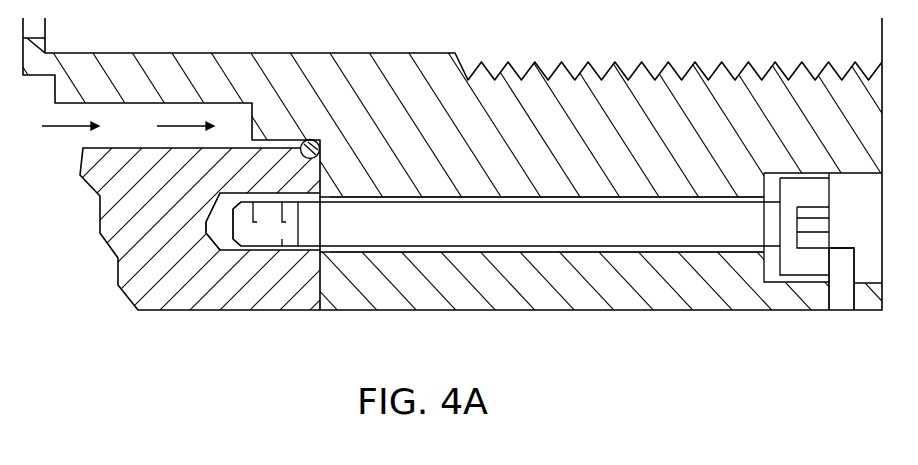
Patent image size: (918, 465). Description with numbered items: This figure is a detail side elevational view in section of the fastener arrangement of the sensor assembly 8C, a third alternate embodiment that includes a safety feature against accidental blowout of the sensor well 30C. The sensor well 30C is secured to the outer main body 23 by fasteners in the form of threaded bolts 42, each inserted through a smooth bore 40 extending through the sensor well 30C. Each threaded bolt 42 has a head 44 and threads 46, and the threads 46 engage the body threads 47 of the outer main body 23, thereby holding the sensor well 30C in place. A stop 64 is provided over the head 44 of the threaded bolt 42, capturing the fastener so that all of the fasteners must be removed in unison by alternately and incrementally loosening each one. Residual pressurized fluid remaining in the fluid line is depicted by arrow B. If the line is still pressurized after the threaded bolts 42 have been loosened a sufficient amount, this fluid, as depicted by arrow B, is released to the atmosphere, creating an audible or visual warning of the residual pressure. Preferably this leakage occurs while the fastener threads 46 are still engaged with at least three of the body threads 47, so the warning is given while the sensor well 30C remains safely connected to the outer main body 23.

The outer main body 23 is at (145, 311).
The sensor well 30C is at (550, 311).
The smooth bore 40 is at (450, 252).
The threaded bolt 42 is at (695, 234).
The head 44 is at (802, 281).
The threads 46 is at (281, 246).
The body threads 47 is at (227, 238).
The stop 64 is at (839, 300).
The arrow B is at (63, 127).
The sensor assembly 8C is at (627, 327).